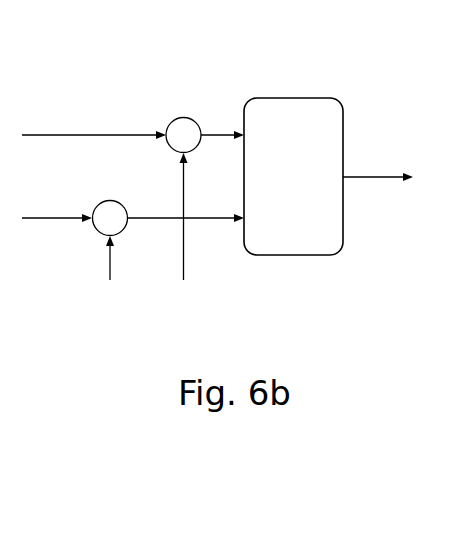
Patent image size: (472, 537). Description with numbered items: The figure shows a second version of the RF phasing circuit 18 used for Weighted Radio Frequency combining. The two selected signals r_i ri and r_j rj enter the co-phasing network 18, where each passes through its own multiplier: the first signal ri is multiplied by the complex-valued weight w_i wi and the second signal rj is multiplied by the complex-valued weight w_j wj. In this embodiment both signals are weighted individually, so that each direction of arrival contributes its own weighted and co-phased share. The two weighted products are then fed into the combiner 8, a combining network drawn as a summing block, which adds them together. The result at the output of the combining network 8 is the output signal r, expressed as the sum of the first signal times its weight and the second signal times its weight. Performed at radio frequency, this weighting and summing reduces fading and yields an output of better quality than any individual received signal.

The RF phasing circuit 18 is at (137, 95).
The combiner 8 is at (279, 118).
The selected signal r_i ri is at (94, 120).
The selected signal r_j rj is at (57, 204).
The weight w_i wi is at (182, 242).
The weight w_j wj is at (110, 283).
The output signal r is at (378, 165).